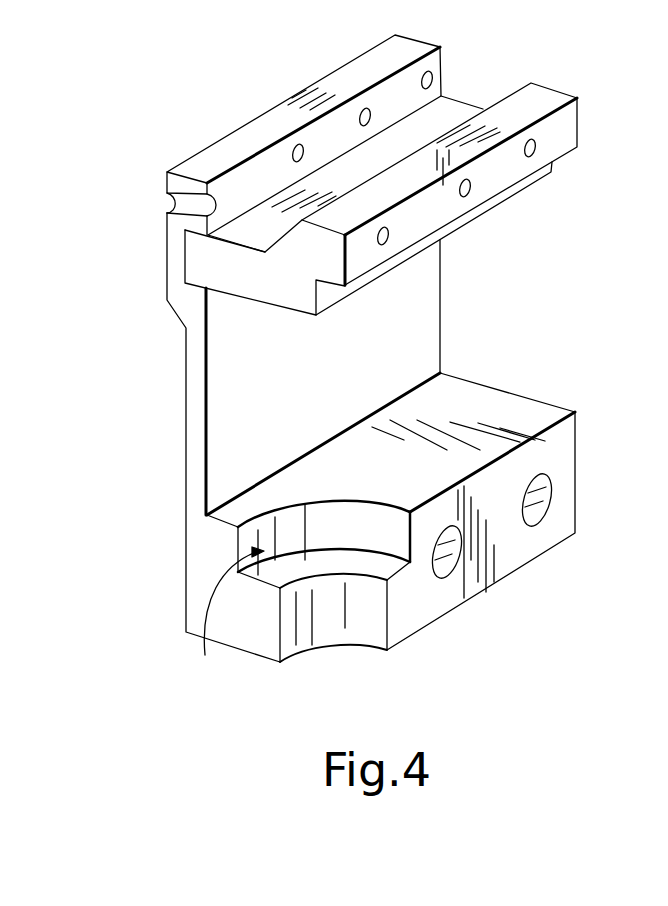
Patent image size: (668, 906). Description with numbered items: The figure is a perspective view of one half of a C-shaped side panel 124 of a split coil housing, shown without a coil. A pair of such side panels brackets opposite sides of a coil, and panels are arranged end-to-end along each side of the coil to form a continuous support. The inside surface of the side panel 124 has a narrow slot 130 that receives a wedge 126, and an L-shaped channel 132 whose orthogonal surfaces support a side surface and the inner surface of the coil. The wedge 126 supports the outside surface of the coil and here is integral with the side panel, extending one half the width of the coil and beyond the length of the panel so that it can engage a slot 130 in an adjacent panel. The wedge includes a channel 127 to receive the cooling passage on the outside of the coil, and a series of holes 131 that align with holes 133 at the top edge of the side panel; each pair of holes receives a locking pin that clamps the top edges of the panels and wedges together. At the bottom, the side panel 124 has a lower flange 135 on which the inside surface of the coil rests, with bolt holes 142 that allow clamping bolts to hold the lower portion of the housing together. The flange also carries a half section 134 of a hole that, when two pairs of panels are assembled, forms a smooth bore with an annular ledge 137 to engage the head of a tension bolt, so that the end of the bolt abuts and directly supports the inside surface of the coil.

The side panel 124 is at (185, 386).
The wedge 126 is at (578, 100).
The channel 127 is at (552, 163).
The narrow slot 130 is at (185, 258).
The holes 131 is at (527, 147).
The L shaped channel 132 is at (271, 364).
The holes 133 is at (364, 110).
The half section of a hole 134 is at (350, 625).
The lower flange 135 is at (510, 393).
The annular ledge 137 is at (225, 617).
The bolt holes 142 is at (447, 562).